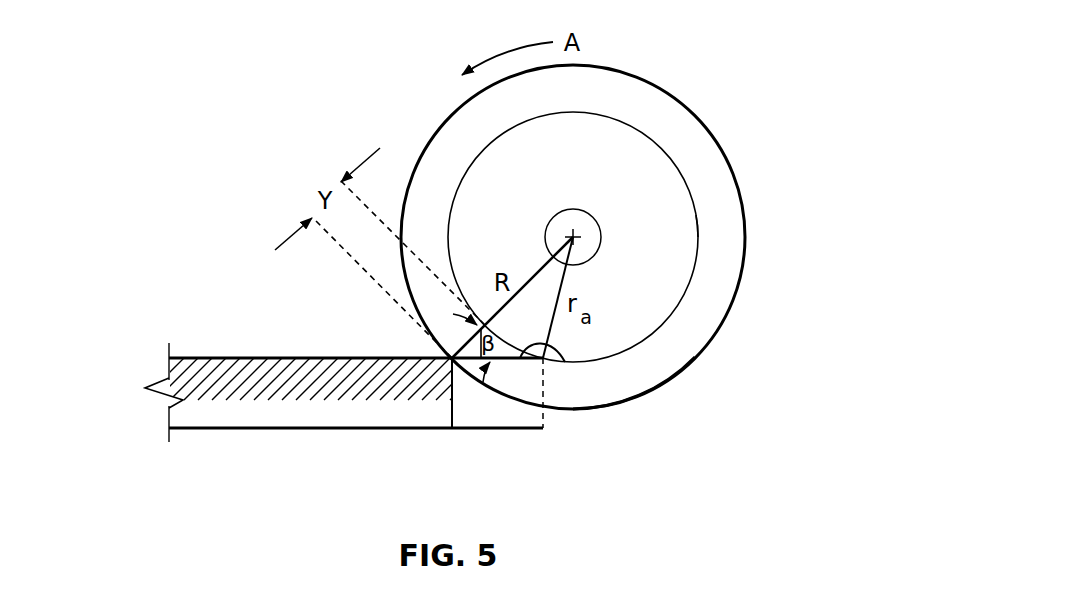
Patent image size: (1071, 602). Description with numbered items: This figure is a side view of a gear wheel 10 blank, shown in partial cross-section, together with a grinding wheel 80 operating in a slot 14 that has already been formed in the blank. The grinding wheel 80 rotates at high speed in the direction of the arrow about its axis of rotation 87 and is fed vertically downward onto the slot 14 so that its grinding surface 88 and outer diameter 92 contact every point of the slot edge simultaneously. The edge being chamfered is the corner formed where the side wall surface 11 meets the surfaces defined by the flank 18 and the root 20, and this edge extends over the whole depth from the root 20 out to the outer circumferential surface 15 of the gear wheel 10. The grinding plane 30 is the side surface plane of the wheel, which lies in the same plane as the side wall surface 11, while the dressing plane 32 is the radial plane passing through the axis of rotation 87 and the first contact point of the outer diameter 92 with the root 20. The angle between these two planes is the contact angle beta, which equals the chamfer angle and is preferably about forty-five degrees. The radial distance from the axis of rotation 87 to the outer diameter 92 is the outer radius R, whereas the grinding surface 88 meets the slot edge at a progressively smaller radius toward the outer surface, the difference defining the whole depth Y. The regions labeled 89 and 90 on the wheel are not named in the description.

The gear wheel 10 is at (247, 412).
The side wall surface 11 is at (260, 357).
The slot 14 is at (498, 433).
The outer circumferential surface 15 is at (543, 415).
The flank 18 is at (508, 417).
The root 20 is at (452, 397).
The grinding plane 30 is at (565, 362).
The dressing plane 32 is at (528, 280).
The grinding wheel 80 is at (674, 56).
The axis of rotation 87 is at (590, 246).
The grinding surface 88 is at (698, 237).
The wheel body 89 is at (556, 183).
The hub region 90 is at (668, 212).
The outer diameter 92 is at (696, 358).